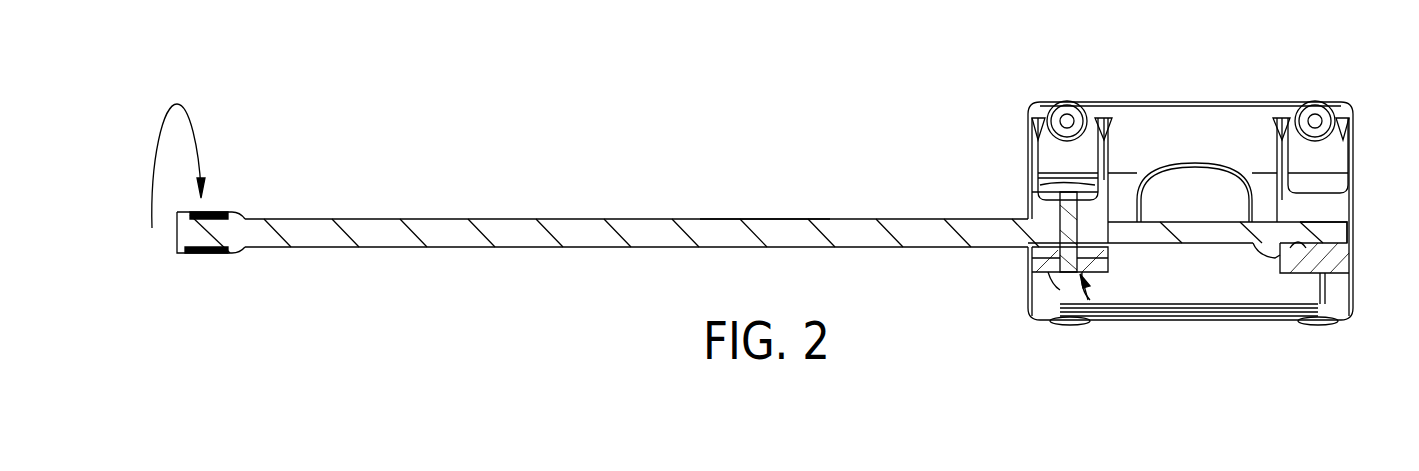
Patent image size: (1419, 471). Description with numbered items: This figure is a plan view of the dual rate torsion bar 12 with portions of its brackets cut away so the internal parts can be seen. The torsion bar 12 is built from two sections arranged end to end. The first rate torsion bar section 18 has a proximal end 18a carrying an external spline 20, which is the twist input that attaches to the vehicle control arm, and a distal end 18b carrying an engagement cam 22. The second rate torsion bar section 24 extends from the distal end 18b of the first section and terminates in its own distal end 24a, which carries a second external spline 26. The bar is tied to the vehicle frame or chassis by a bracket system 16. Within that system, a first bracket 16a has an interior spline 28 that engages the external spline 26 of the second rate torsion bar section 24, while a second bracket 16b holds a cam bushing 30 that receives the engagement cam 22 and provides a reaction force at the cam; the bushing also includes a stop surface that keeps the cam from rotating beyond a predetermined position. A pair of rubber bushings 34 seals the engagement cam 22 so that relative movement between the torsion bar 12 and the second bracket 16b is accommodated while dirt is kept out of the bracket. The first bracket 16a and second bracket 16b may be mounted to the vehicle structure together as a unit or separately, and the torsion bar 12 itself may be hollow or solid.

The dual rate torsion bar 12 is at (762, 189).
The bracket system 16 is at (1358, 99).
The first bracket 16a is at (1327, 213).
The second bracket 16b is at (1117, 177).
The first rate torsion bar section 18 is at (565, 237).
The proximal end 18a is at (240, 254).
The distal end 18b is at (1030, 250).
The external spline 20 is at (215, 212).
The engagement cam 22 is at (1058, 290).
The second rate torsion bar section 24 is at (1200, 232).
The distal end 24a is at (1337, 230).
The external spline 26 is at (1328, 257).
The interior spline 28 is at (1293, 253).
The cam bushing 30 is at (1088, 300).
The rubber bushings 34 is at (1045, 187).